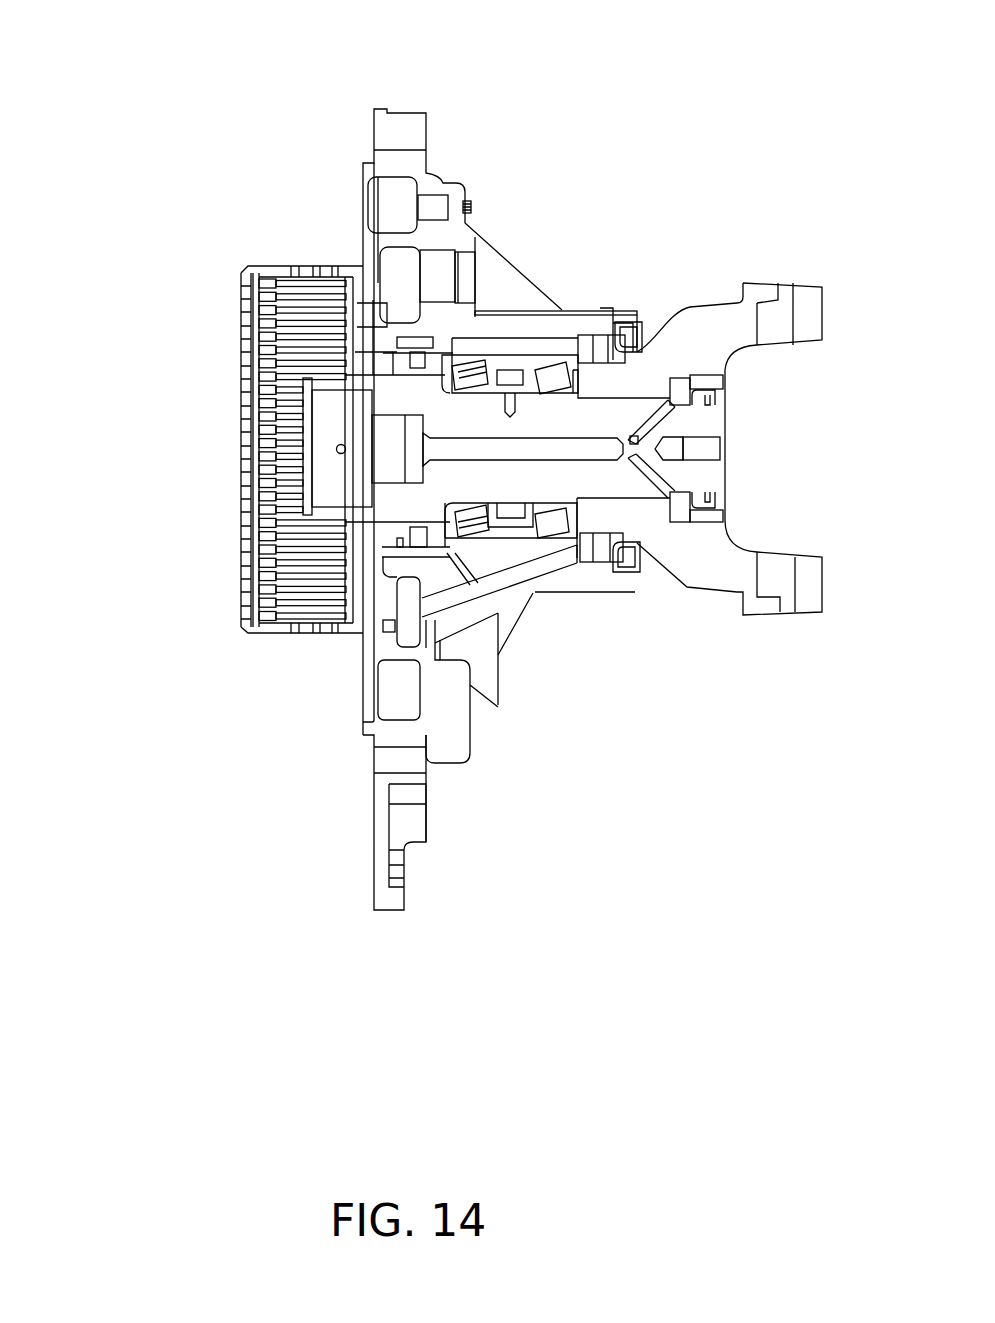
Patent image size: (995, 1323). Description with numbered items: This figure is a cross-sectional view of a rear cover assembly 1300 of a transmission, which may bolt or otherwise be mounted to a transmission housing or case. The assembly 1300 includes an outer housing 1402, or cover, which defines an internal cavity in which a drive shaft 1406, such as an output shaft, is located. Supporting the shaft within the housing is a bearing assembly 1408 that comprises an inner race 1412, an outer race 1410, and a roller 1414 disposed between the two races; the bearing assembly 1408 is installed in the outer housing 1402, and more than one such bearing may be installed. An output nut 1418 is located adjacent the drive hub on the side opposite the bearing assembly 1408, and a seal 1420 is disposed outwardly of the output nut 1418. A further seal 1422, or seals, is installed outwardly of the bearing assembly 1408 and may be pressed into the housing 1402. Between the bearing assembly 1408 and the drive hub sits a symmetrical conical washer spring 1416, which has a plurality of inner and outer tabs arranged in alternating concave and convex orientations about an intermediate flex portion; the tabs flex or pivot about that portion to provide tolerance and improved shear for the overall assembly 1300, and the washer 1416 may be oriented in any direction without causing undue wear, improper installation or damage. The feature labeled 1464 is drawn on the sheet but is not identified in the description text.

The rear cover assembly 1300 is at (190, 160).
The outer housing 1402 is at (515, 332).
The drive shaft 1406 is at (690, 422).
The bearing assembly 1408 is at (553, 345).
The outer race 1410 is at (468, 365).
The inner race 1412 is at (557, 385).
The roller 1414 is at (557, 383).
The symmetrical conical washer spring 1416 is at (578, 395).
The output nut 1418 is at (678, 507).
The seal 1420 is at (702, 498).
The seal 1422 is at (623, 563).
The mounting flange 1464 is at (718, 320).